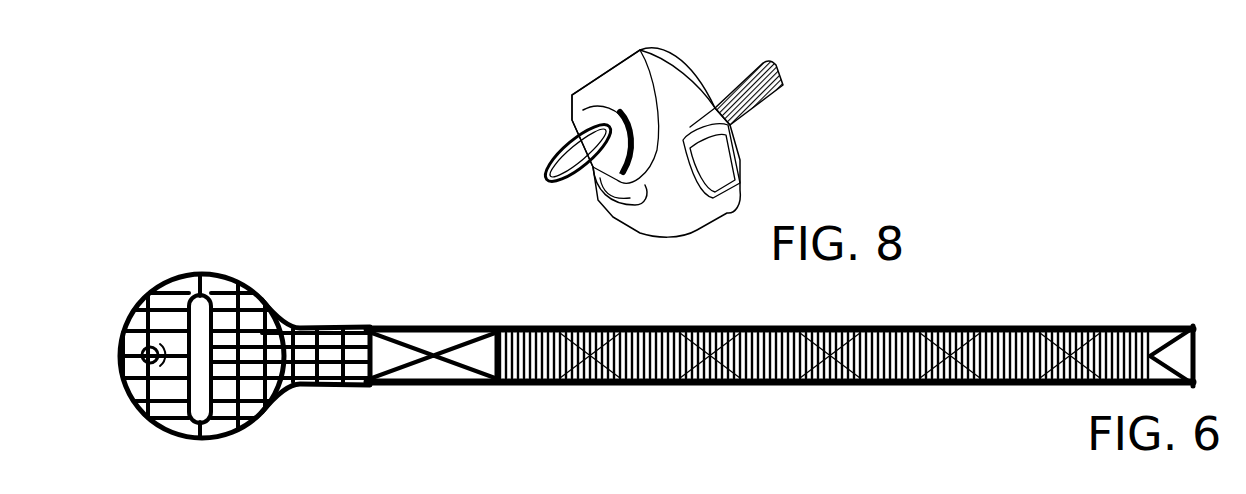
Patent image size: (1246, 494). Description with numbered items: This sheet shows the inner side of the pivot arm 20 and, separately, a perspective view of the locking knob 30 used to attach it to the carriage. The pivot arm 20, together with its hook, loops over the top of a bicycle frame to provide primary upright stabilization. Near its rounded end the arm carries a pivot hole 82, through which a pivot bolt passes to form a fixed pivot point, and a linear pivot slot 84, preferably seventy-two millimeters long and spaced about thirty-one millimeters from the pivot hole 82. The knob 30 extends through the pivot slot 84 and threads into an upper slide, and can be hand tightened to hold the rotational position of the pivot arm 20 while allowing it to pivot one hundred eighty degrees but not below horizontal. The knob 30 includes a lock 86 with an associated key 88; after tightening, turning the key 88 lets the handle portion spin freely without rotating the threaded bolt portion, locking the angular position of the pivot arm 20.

In FIG. 6, the pivot arm 20 is at (1036, 250).
In FIG. 8, the knob 30 is at (530, 71).
In FIG. 6, the pivot hole 82 is at (150, 358).
In FIG. 6, the pivot slot 84 is at (203, 312).
In FIG. 8, the lock 86 is at (617, 153).
In FIG. 8, the key 88 is at (572, 147).